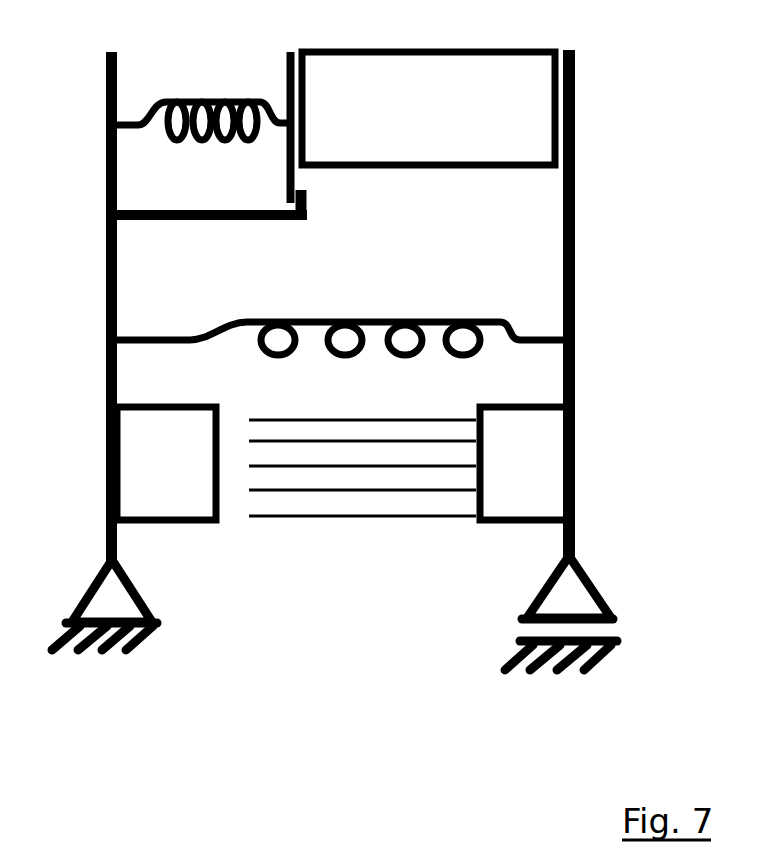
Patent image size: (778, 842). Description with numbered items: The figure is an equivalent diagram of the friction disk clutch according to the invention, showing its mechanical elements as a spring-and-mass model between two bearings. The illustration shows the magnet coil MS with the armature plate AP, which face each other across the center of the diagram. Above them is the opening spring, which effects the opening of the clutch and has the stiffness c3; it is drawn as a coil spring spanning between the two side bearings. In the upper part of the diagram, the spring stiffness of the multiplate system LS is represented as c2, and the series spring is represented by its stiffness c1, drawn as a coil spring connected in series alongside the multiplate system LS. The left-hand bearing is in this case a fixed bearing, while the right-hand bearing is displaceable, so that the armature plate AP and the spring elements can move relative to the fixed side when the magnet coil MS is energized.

The series spring stiffness c1 is at (202, 95).
The multiplate system spring stiffness c2 is at (428, 82).
The opening spring stiffness c3 is at (340, 312).
The multiplate system LS is at (427, 107).
The magnet coil MS is at (166, 463).
The armature plate AP is at (524, 463).